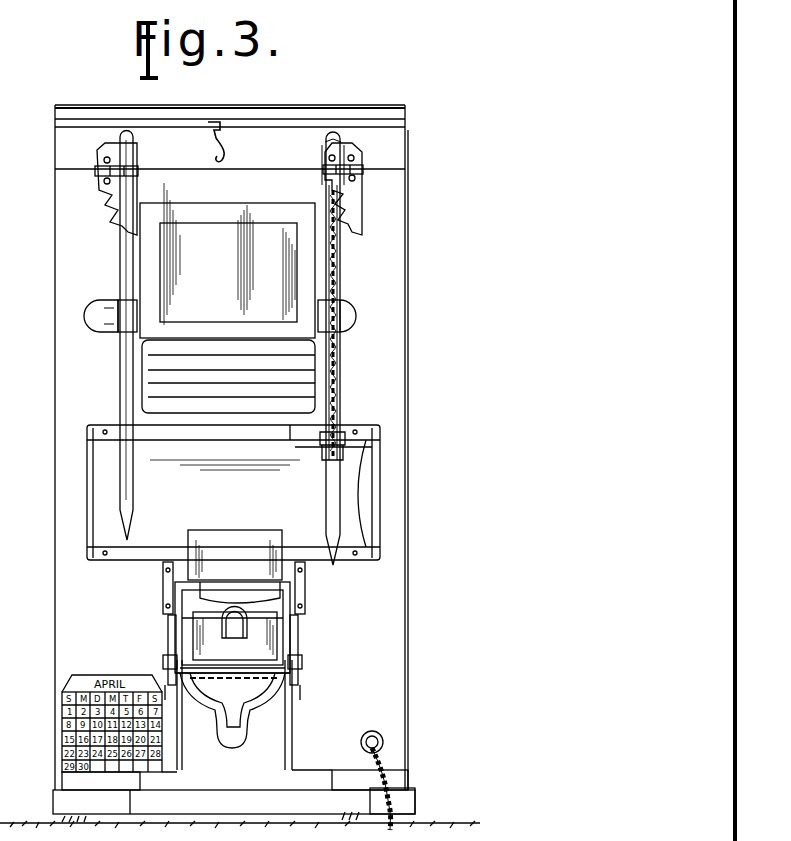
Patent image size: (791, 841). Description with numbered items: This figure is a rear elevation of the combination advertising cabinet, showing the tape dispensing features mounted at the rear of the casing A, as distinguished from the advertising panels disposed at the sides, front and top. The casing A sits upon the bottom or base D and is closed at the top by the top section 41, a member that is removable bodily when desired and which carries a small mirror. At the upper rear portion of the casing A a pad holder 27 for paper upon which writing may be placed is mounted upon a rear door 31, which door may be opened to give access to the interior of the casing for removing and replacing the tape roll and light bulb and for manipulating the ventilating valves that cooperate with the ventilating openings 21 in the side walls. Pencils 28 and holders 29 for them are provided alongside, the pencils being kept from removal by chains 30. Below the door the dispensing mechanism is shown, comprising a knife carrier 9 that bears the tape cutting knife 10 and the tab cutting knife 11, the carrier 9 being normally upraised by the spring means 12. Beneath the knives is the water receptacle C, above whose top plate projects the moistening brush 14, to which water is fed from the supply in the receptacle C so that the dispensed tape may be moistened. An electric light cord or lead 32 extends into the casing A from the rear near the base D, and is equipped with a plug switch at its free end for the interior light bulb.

The top section 41 is at (397, 111).
The pencils 28 is at (120, 269).
The holders 29 is at (112, 324).
The pad holder 27 is at (343, 345).
The casing A is at (407, 341).
The chains 30 is at (343, 372).
The rear door 31 is at (390, 414).
The knife carrier 9 is at (275, 546).
The ventilating openings 21 is at (300, 590).
The tape cutting knife 10 is at (290, 602).
The tab cutting knife 11 is at (247, 626).
The spring means 12 is at (172, 641).
The moistening brush 14 is at (300, 681).
The water receptacle C is at (283, 723).
The electric light cord 32 is at (385, 757).
The base D is at (417, 800).